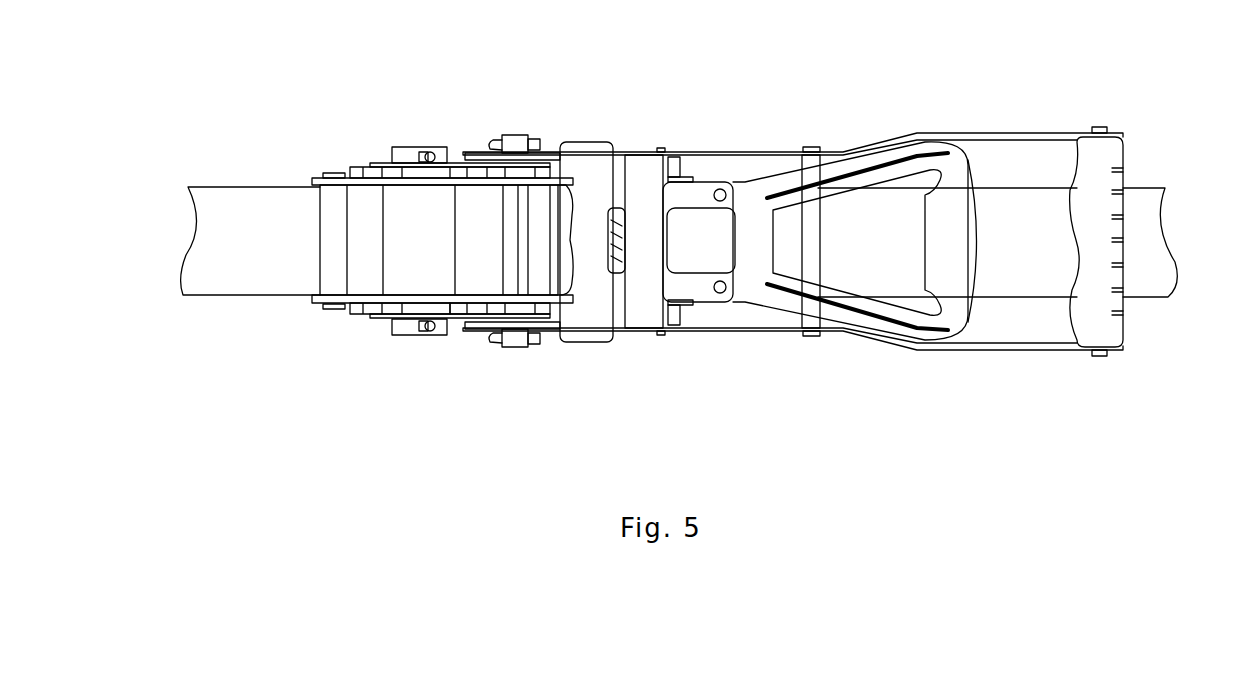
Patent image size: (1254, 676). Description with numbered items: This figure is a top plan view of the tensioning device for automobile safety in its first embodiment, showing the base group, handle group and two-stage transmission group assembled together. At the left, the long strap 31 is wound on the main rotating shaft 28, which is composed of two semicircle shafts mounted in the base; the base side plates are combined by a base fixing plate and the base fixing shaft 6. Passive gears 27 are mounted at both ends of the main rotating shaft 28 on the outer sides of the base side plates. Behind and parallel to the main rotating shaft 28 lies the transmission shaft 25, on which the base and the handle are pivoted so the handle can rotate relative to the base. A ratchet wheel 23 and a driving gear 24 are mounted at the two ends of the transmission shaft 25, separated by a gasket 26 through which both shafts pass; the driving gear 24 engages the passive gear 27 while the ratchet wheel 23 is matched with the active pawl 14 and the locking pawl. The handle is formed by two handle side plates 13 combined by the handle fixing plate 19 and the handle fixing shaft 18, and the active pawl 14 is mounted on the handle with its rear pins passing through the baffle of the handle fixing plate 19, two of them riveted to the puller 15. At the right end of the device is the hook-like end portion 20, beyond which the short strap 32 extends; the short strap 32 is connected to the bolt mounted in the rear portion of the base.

The base fixing shaft 6 is at (332, 270).
The handle side plates 13 is at (990, 345).
The active pawl 14 is at (602, 183).
The puller 15 is at (948, 203).
The handle fixing shaft 18 is at (810, 165).
The handle fixing plate 19 is at (647, 183).
The hook end 20 is at (1103, 157).
The ratchet wheel 23 is at (480, 323).
The driving gear 24 is at (543, 310).
The transmission shaft 25 is at (522, 138).
The gasket 26 is at (387, 318).
The passive gear 27 is at (352, 315).
The main rotating shaft 28 is at (405, 148).
The long strap 31 is at (272, 218).
The short strap 32 is at (1155, 283).